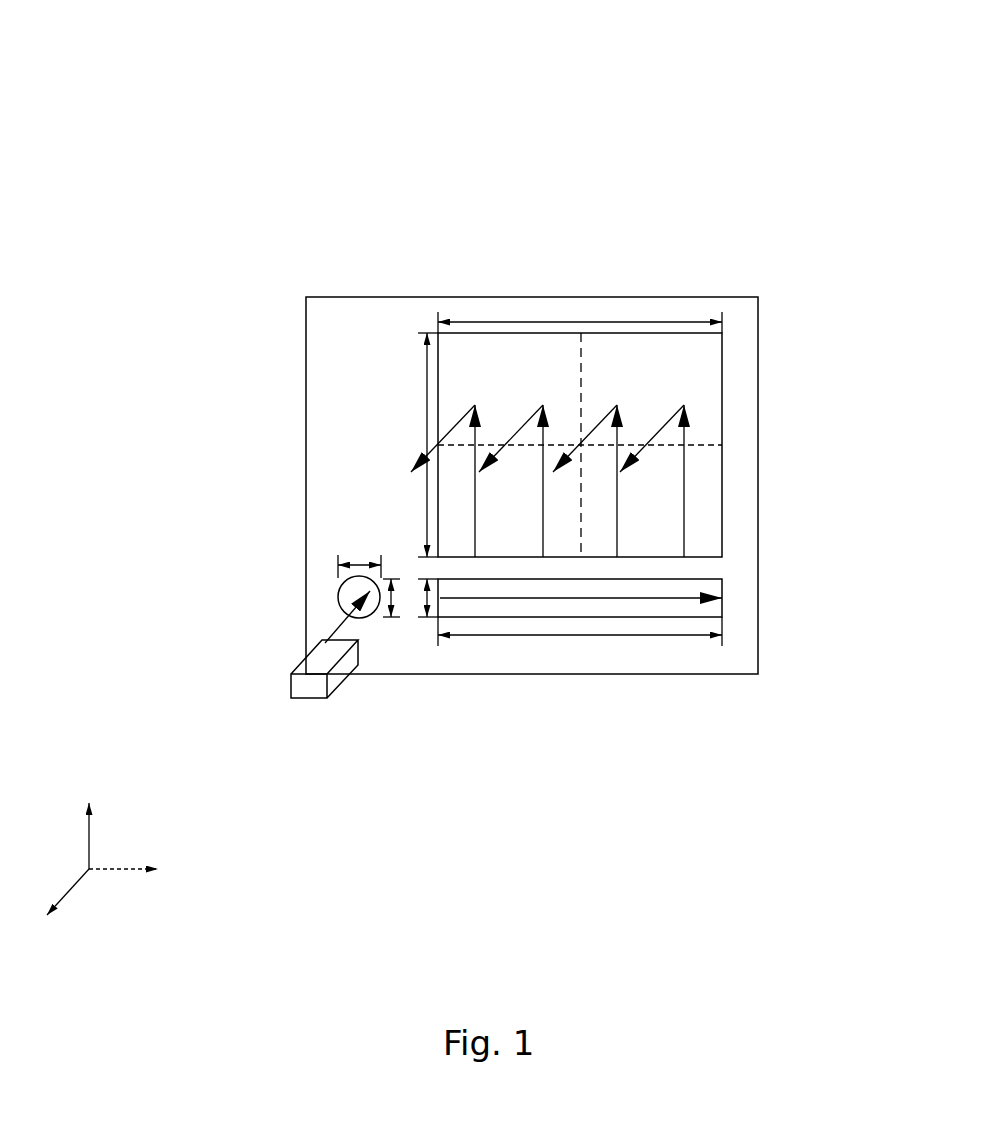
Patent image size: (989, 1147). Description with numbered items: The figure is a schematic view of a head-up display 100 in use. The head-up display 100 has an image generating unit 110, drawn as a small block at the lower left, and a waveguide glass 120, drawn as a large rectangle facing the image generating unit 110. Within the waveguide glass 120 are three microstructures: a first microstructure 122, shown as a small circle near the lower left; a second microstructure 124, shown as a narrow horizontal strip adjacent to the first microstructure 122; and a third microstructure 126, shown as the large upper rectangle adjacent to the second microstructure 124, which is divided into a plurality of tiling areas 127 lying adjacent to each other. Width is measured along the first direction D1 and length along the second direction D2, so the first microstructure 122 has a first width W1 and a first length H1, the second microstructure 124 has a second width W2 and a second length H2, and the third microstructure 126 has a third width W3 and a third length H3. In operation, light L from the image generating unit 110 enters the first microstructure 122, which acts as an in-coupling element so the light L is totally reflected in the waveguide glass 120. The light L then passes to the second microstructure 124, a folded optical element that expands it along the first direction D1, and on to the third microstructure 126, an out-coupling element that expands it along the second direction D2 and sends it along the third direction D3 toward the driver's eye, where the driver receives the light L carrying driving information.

The head-up display 100 is at (131, 50).
The image generating unit 110 is at (292, 683).
The waveguide glass 120 is at (368, 297).
The first microstructure 122 is at (338, 600).
The second microstructure 124 is at (722, 583).
The third microstructure 126 is at (722, 486).
The tiling areas 127 is at (682, 393).
The light L is at (460, 424).
The first width W1 is at (359, 554).
The second width W2 is at (580, 642).
The third width W3 is at (571, 322).
The first length H1 is at (408, 582).
The second length H2 is at (425, 598).
The third length H3 is at (414, 445).
The first direction D1 is at (145, 873).
The second direction D2 is at (88, 821).
The third direction D3 is at (57, 907).